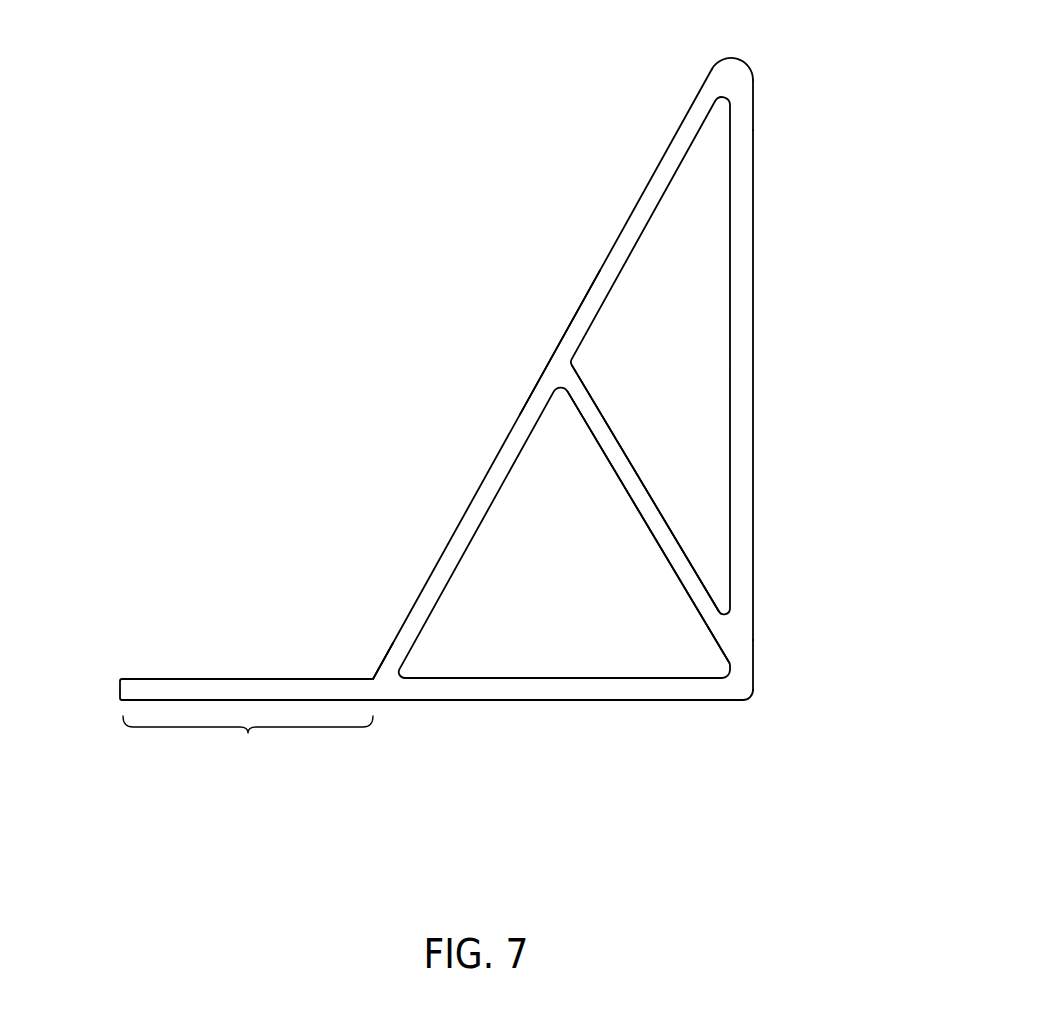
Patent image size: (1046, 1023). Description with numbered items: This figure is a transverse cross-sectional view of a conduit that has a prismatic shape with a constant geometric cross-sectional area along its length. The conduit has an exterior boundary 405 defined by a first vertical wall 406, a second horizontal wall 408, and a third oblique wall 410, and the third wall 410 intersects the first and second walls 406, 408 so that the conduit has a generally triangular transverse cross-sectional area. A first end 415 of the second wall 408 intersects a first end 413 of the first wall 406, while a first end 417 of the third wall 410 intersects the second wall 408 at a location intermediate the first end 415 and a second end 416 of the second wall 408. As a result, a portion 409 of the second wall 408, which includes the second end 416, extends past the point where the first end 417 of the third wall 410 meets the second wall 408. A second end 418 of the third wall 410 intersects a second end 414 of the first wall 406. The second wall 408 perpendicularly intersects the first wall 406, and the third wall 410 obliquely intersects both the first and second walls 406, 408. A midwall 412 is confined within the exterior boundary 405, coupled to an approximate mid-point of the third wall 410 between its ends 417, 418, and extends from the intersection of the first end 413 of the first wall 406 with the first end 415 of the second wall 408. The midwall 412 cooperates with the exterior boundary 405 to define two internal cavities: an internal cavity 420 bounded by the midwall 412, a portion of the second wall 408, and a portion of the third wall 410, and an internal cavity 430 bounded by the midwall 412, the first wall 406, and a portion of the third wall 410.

The exterior boundary 405 is at (648, 185).
The first vertical wall 406 is at (757, 388).
The second horizontal wall 408 is at (520, 702).
The portion of second wall 409 is at (247, 729).
The third oblique wall 410 is at (559, 345).
The midwall 412 is at (587, 430).
The first end of first wall 413 is at (757, 668).
The second end of first wall 414 is at (756, 78).
The first end of second wall 415 is at (733, 702).
The second end of second wall 416 is at (120, 679).
The first end of third wall 417 is at (372, 677).
The second end of third wall 418 is at (707, 80).
The internal cavity 420 is at (546, 583).
The internal cavity 430 is at (658, 386).